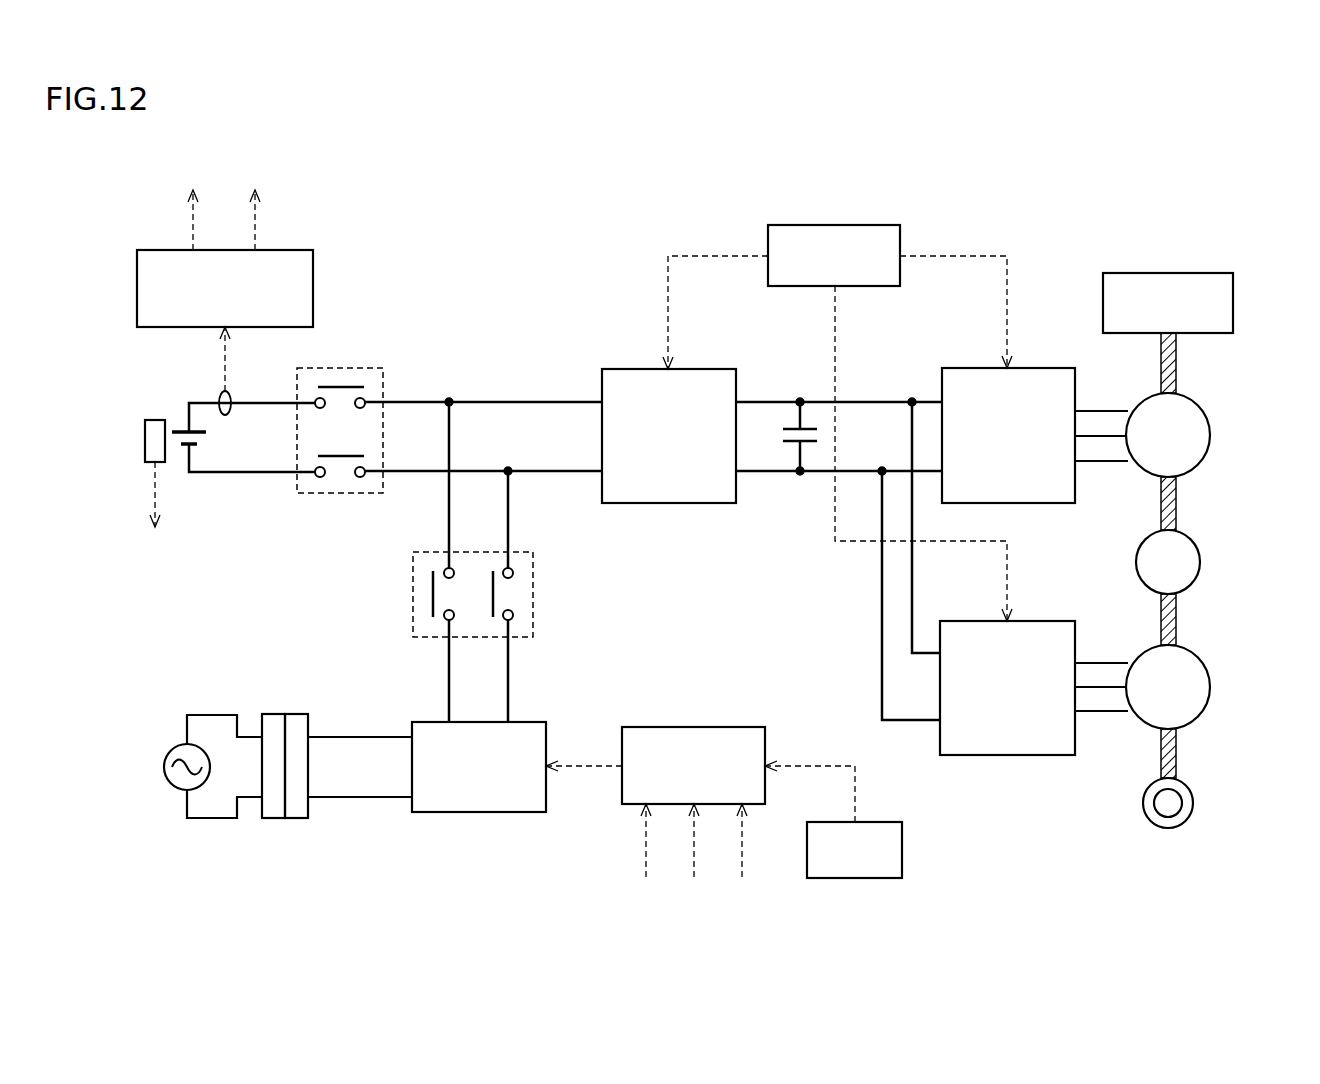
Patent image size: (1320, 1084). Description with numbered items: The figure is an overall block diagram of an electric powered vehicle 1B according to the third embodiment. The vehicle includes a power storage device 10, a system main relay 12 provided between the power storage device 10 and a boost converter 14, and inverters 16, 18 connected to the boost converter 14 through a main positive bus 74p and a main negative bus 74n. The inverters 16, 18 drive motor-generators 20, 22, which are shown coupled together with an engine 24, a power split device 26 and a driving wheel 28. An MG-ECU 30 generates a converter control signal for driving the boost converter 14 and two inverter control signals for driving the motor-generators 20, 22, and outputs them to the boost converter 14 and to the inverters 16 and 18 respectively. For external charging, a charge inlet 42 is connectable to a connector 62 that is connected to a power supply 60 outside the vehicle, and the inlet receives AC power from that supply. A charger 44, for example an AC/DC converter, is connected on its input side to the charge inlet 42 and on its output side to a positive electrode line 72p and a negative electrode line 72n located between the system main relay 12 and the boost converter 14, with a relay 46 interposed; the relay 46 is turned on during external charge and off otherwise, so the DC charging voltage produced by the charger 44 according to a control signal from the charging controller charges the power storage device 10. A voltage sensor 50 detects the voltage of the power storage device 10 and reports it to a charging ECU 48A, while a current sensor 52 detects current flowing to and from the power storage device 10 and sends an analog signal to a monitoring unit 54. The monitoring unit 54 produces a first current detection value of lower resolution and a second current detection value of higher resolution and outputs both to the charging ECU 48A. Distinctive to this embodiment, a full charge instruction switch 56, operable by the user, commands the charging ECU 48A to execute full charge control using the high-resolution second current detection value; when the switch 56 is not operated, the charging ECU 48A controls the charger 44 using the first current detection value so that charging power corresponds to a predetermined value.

The electric powered vehicle 1B is at (414, 184).
The power storage device 10 is at (179, 430).
The system main relay 12 is at (348, 368).
The boost converter 14 is at (700, 369).
The inverter 16 is at (1045, 368).
The inverter 18 is at (1038, 755).
The motor-generator 20 is at (1210, 435).
The motor-generator 22 is at (1212, 687).
The engine 24 is at (1195, 273).
The power split device 26 is at (1200, 560).
The driving wheel 28 is at (1195, 803).
The MG-ECU 30 is at (860, 225).
The charge inlet 42 is at (296, 714).
The charger 44 is at (525, 722).
The relay 46 is at (533, 590).
The charging ECU 48A is at (707, 727).
The voltage sensor 50 is at (145, 438).
The current sensor 52 is at (225, 415).
The monitoring unit 54 is at (137, 288).
The full charge instruction switch 56 is at (902, 850).
The power supply 60 is at (171, 748).
The connector 62 is at (272, 714).
The positive electrode line 72p is at (477, 401).
The negative electrode line 72n is at (477, 470).
The main positive bus 74p is at (877, 401).
The main negative bus 74n is at (767, 472).